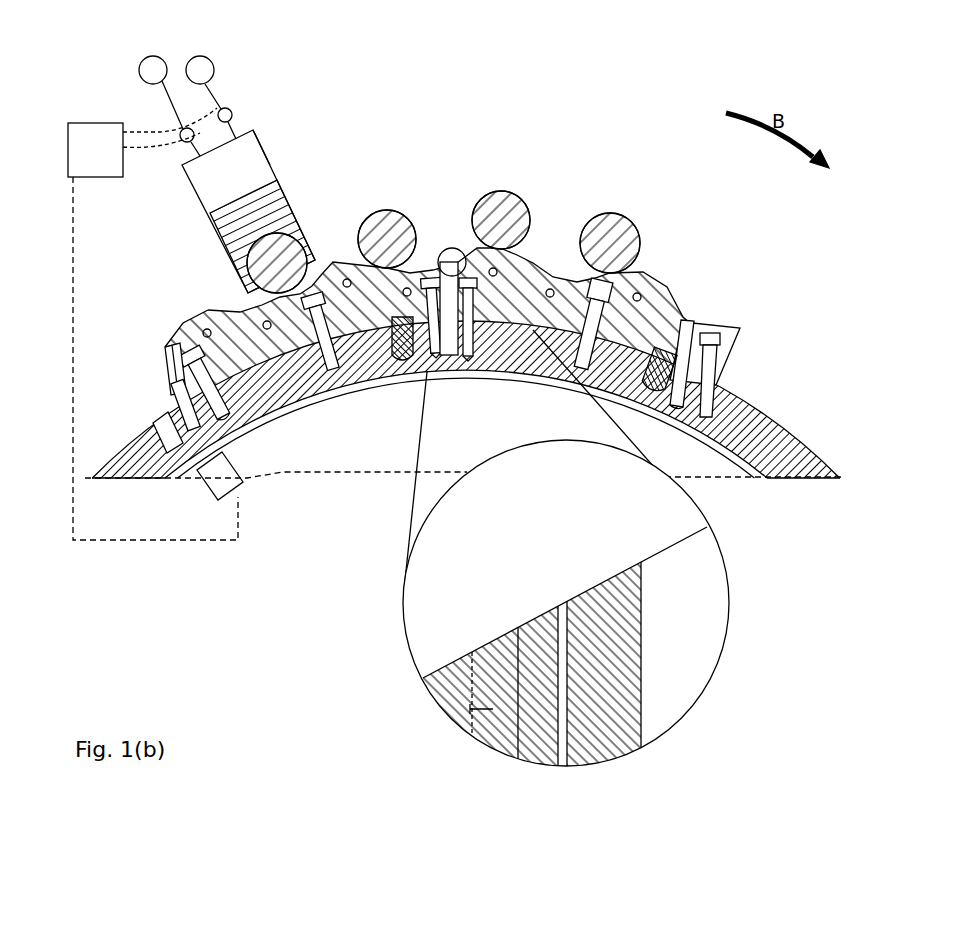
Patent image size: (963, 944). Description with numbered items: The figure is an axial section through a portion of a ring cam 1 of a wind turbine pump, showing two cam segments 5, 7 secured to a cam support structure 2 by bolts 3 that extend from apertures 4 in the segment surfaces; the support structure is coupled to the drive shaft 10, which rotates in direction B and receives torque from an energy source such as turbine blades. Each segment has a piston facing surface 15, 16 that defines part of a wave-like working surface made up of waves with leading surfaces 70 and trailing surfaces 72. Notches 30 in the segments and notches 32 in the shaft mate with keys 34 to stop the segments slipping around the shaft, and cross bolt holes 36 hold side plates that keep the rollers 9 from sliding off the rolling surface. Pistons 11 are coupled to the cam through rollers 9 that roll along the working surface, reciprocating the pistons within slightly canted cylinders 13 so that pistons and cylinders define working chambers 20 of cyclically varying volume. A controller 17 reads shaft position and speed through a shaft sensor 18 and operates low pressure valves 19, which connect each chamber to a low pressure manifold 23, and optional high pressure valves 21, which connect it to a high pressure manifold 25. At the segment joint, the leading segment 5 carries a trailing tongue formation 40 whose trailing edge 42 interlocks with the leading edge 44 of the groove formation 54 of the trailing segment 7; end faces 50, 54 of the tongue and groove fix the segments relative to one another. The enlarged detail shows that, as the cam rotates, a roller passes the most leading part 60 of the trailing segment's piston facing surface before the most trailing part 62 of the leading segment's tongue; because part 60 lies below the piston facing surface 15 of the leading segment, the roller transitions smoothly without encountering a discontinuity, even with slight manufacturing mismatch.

The ring cam 1 is at (452, 391).
The cam support structure 2 is at (477, 416).
The bolts 3 is at (318, 470).
The apertures 4 is at (597, 222).
The leading cam segment 5 is at (717, 360).
The trailing cam segment 7 is at (173, 390).
The rollers 9 is at (388, 220).
The drive shaft 10 is at (380, 465).
The pistons 11 is at (247, 233).
The cylinders 13 is at (268, 148).
The piston facing surface 15 is at (476, 200).
The piston facing surface 16 is at (200, 312).
The controller 17 is at (107, 163).
The shaft sensor 18 is at (218, 473).
The low pressure valves 19 is at (182, 128).
The working chambers 20 is at (210, 169).
The high pressure valves 21 is at (230, 108).
The low pressure manifold 23 is at (152, 57).
The high pressure manifold 25 is at (198, 57).
The segment notch 30 is at (756, 335).
The shaft notch 32 is at (740, 466).
The keys 34 is at (712, 398).
The cross bolt holes 36 is at (639, 294).
The trailing tongue formation 40 is at (451, 278).
The trailing edge 42 is at (558, 608).
The leading edge 44 is at (487, 642).
The tongue end face 50 is at (485, 710).
The groove formation 54 is at (470, 683).
The most leading part 60 is at (543, 629).
The most trailing part 62 is at (478, 665).
The leading surfaces 70 is at (470, 195).
The trailing surfaces 72 is at (334, 299).